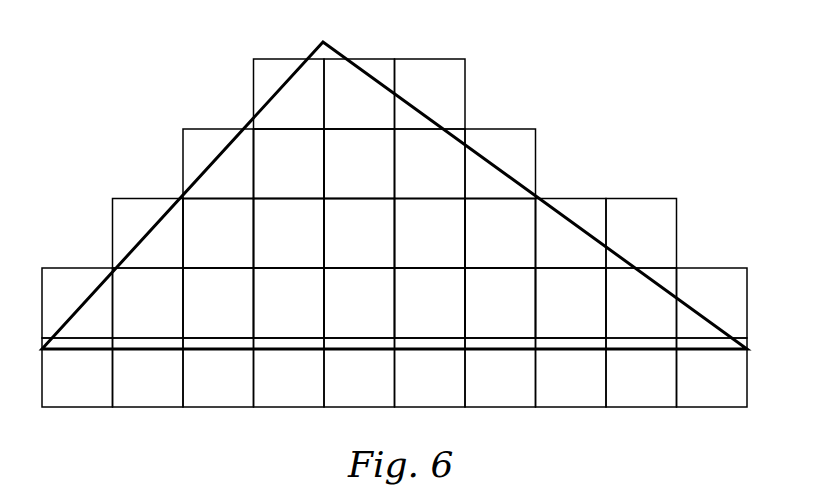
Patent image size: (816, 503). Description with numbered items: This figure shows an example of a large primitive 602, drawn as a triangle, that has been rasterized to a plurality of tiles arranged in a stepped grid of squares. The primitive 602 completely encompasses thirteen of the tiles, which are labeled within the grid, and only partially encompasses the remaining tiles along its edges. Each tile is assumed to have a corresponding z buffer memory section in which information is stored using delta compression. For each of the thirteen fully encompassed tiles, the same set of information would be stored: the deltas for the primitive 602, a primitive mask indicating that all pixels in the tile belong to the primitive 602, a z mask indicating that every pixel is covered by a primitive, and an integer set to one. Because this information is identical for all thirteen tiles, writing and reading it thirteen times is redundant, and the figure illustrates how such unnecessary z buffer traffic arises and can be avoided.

The large primitive 602 is at (570, 218).